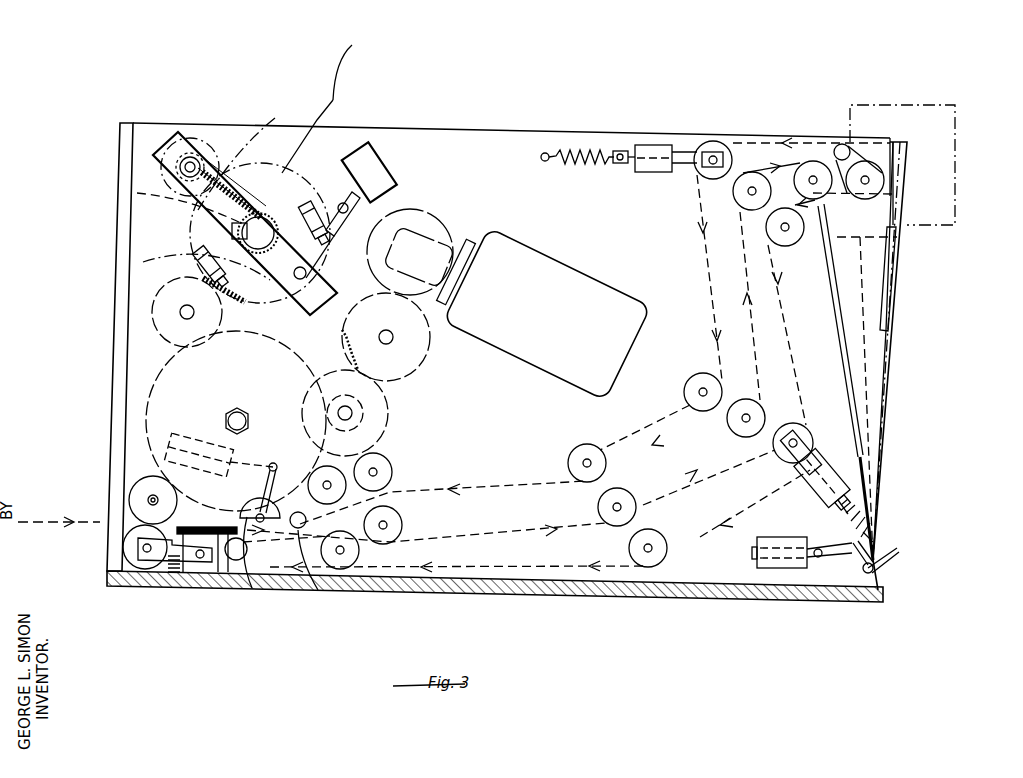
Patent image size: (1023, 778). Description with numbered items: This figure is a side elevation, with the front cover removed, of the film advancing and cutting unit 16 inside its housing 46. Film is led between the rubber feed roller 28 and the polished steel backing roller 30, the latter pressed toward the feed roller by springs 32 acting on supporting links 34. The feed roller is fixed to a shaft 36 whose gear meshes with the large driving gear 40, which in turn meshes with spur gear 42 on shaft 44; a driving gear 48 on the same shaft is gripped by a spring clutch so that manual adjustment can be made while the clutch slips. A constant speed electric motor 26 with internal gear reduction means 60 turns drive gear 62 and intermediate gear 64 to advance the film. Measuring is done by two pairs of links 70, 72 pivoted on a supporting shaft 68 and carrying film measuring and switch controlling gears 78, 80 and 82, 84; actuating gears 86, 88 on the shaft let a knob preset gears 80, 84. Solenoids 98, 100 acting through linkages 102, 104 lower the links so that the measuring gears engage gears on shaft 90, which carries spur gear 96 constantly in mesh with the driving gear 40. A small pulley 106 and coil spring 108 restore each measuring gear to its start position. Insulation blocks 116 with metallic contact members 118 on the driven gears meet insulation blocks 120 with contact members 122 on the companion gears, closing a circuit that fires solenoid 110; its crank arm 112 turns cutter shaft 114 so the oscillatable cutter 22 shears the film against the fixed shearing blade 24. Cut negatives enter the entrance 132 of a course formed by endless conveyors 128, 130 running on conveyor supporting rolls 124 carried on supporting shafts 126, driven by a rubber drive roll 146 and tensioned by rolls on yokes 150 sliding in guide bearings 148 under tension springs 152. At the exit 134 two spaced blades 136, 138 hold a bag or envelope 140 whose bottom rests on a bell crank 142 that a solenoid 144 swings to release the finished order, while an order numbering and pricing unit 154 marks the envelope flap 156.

The film advancing and cutting unit 16 is at (118, 130).
The oscillatable cutter 22 is at (248, 505).
The fixed shearing blade 24 is at (222, 562).
The electric motor 26 is at (583, 283).
The feed roller 28 is at (140, 490).
The backing roller 30 is at (132, 550).
The springs 32 is at (152, 578).
The supporting links 34 is at (196, 560).
The shaft 36 is at (150, 498).
The large driving gear 40 is at (160, 395).
The spur gear 42 is at (362, 414).
The shaft 44 is at (352, 417).
The housing 46 is at (508, 131).
The driving gear 48 is at (378, 400).
The internal gear reduction means 60 is at (436, 252).
The drive gear 62 is at (429, 218).
The intermediate gear 64 is at (375, 320).
The supporting shaft 68 is at (178, 132).
The pair of links 70 is at (222, 160).
The pair of links 72 is at (255, 175).
The film measuring and switch controlling gear 78 is at (365, 21).
The film measuring and switch controlling gear 80 is at (365, 37).
The film measuring and switch controlling gear 82 is at (365, 53).
The film measuring and switch controlling gear 84 is at (365, 69).
The actuating gear 86 is at (200, 154).
The actuating gear 88 is at (204, 126).
The shaft 90 is at (185, 310).
The spur gear 96 is at (143, 262).
The solenoid 98 is at (396, 138).
The solenoid 100 is at (367, 189).
The linkage 102 is at (343, 140).
The linkage 104 is at (359, 120).
The small pulley 106 is at (137, 193).
The coil spring 108 is at (275, 120).
The solenoid 110 is at (176, 436).
The crank arm 112 is at (270, 482).
The cutter shaft 114 is at (250, 535).
The insulation block 116 is at (328, 205).
The metallic contact member 118 is at (302, 206).
The insulation block 120 is at (188, 260).
The metallic contact member 122 is at (190, 222).
The conveyor supporting rolls 124 is at (711, 148).
The supporting shafts 126 is at (752, 188).
The endless conveyor 128 is at (500, 484).
The endless conveyor 130 is at (495, 548).
The entrance 132 is at (302, 535).
The exit 134 is at (832, 188).
The blade 136 is at (836, 282).
The blade 138 is at (890, 294).
The bag or envelope 140 is at (890, 388).
The bell crank 142 is at (880, 560).
The solenoid 144 is at (777, 570).
The drive roll 146 is at (345, 560).
The guide bearing 148 is at (656, 144).
The yoke 150 is at (685, 177).
The tension spring 152 is at (589, 139).
The order numbering and pricing unit 154 is at (952, 188).
The flap 156 is at (893, 228).